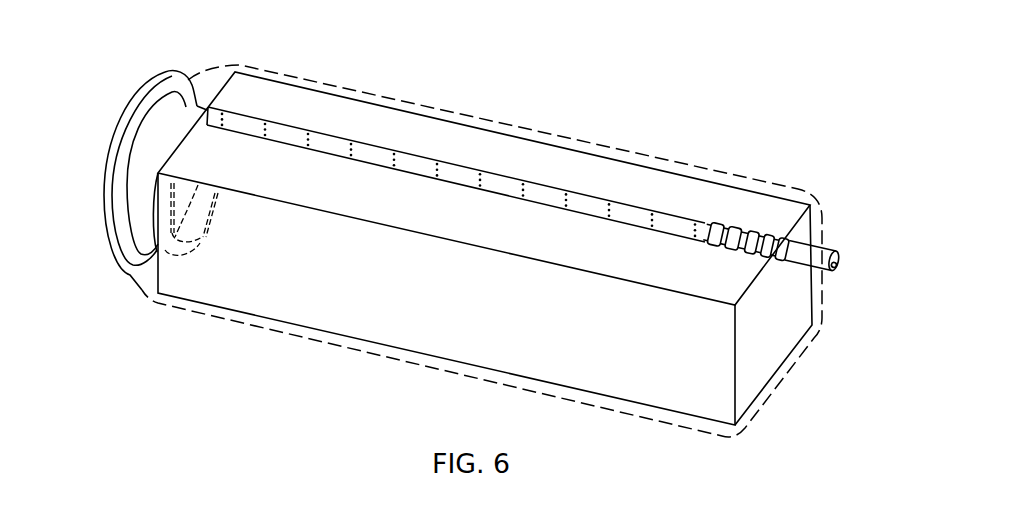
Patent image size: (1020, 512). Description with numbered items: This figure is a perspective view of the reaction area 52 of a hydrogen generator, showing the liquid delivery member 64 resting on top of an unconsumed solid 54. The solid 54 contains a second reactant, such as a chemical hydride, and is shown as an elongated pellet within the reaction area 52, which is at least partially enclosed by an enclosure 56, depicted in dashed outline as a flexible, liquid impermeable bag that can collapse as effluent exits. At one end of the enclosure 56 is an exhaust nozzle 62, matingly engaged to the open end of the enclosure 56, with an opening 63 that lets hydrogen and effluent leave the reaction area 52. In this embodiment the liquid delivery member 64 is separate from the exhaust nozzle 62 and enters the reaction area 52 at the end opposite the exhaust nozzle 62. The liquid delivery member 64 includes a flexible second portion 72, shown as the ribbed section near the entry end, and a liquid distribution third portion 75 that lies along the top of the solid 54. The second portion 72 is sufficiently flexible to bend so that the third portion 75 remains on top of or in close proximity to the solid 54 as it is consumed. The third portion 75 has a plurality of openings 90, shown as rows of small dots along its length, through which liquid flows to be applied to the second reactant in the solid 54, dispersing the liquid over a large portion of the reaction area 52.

The reaction area 52 is at (645, 112).
The solid 54 is at (662, 190).
The enclosure 56 is at (553, 132).
The exhaust nozzle 62 is at (112, 167).
The opening 63 is at (205, 250).
The liquid delivery member 64 is at (834, 231).
The flexible second portion 72 is at (737, 230).
The liquid distribution third portion 75 is at (468, 170).
The openings 90 is at (353, 145).